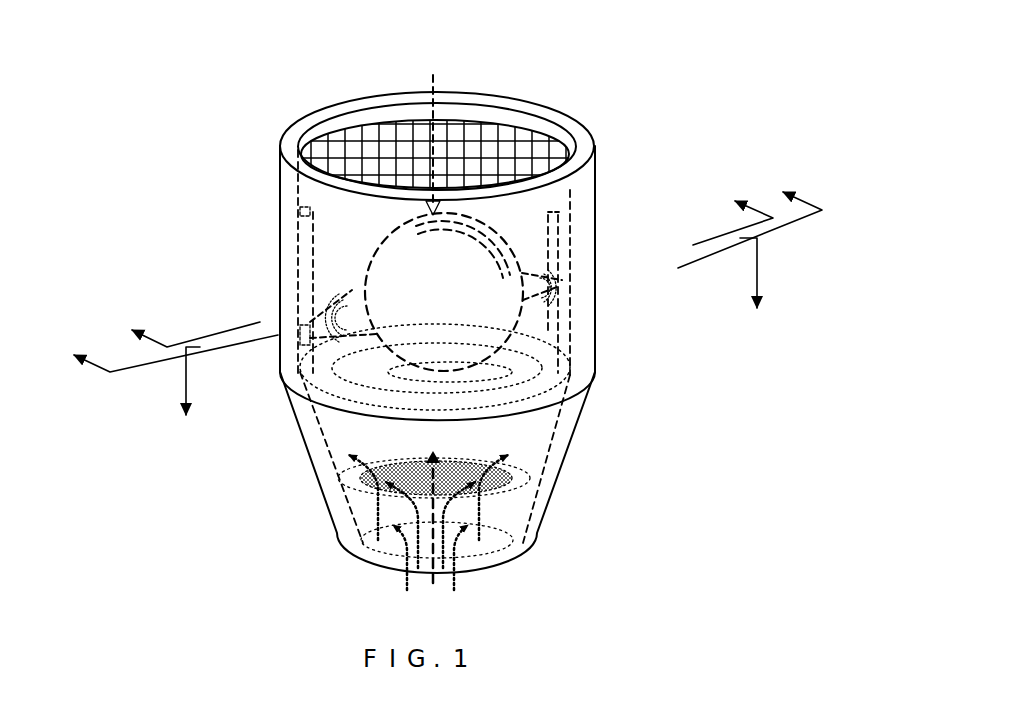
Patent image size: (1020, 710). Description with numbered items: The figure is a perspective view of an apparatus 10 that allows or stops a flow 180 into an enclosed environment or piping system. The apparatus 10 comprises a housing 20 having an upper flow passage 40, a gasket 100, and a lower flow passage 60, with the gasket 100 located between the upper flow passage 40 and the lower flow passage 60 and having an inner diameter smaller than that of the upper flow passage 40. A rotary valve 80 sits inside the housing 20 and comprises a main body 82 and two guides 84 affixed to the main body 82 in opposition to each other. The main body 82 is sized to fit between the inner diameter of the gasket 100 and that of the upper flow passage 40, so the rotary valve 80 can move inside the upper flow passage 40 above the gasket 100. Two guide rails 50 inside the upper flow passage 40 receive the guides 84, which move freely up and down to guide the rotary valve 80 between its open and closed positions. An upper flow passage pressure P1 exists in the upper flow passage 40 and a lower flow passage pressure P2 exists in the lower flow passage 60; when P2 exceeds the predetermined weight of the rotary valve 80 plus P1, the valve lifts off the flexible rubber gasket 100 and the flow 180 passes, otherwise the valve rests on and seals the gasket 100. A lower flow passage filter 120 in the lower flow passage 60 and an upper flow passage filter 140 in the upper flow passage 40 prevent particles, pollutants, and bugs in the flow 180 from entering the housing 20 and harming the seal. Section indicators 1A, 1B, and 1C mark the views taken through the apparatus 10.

The apparatus 10 is at (457, 68).
The housing 20 is at (272, 310).
The upper flow passage 40 is at (290, 185).
The guide rails 50 is at (300, 250).
The lower flow passage 60 is at (318, 442).
The rotary valve 80 is at (508, 225).
The main body 82 is at (502, 243).
The guides 84 is at (298, 300).
The gasket 100 is at (520, 372).
The lower flow passage filter 120 is at (497, 468).
The upper flow passage filter 140 is at (337, 126).
The flow 180 is at (453, 578).
The upper flow passage pressure P1 is at (432, 205).
The lower flow passage pressure P2 is at (433, 552).
The section view 1A is at (473, 350).
The section view 1B is at (439, 261).
The section view 1C is at (434, 267).